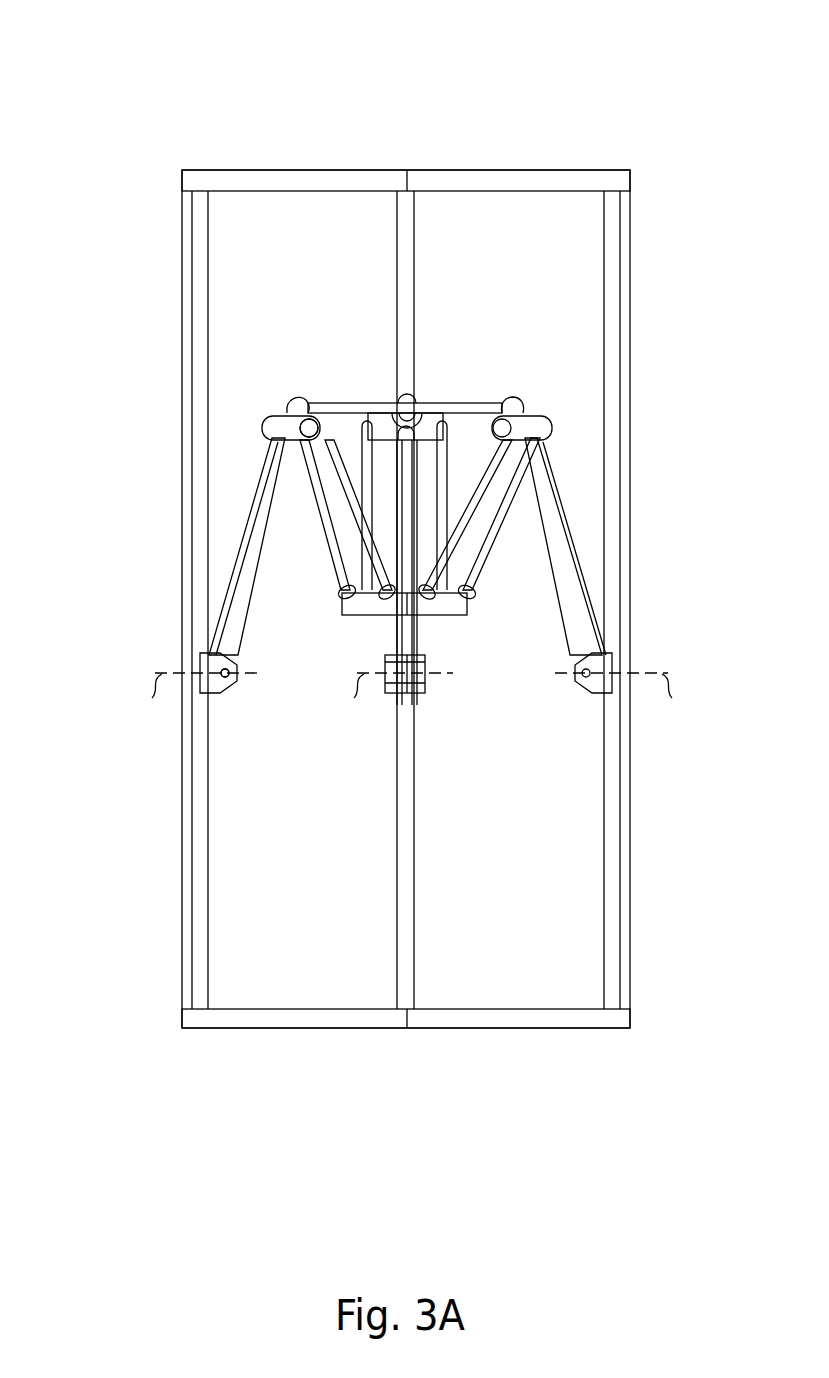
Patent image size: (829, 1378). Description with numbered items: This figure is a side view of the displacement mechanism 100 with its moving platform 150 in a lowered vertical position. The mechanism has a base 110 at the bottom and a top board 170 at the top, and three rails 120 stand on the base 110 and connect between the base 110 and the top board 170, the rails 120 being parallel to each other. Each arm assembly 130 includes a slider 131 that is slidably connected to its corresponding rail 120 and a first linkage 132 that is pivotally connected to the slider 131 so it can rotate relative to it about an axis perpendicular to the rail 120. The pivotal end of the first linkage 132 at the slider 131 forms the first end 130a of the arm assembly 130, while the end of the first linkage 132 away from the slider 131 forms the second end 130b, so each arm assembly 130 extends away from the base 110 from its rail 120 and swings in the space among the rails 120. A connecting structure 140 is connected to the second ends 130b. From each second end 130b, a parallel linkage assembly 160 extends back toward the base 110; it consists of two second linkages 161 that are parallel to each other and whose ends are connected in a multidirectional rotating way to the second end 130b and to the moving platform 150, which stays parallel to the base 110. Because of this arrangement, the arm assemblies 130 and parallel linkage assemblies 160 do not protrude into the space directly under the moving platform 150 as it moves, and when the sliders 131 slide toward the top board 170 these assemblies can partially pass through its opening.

The displacement mechanism 100 is at (88, 36).
The base 110 is at (288, 1029).
The rail 120 is at (186, 495).
The arm assembly 130 is at (76, 555).
The first end of arm assembly 130a is at (228, 703).
The second end of arm assembly 130b is at (283, 387).
The slider 131 is at (200, 660).
The first linkage 132 is at (245, 567).
The connecting structure 140 is at (472, 403).
The moving platform 150 is at (447, 614).
The parallel linkage assembly 160 is at (318, 560).
The second linkage 161 is at (310, 520).
The top board 170 is at (231, 184).